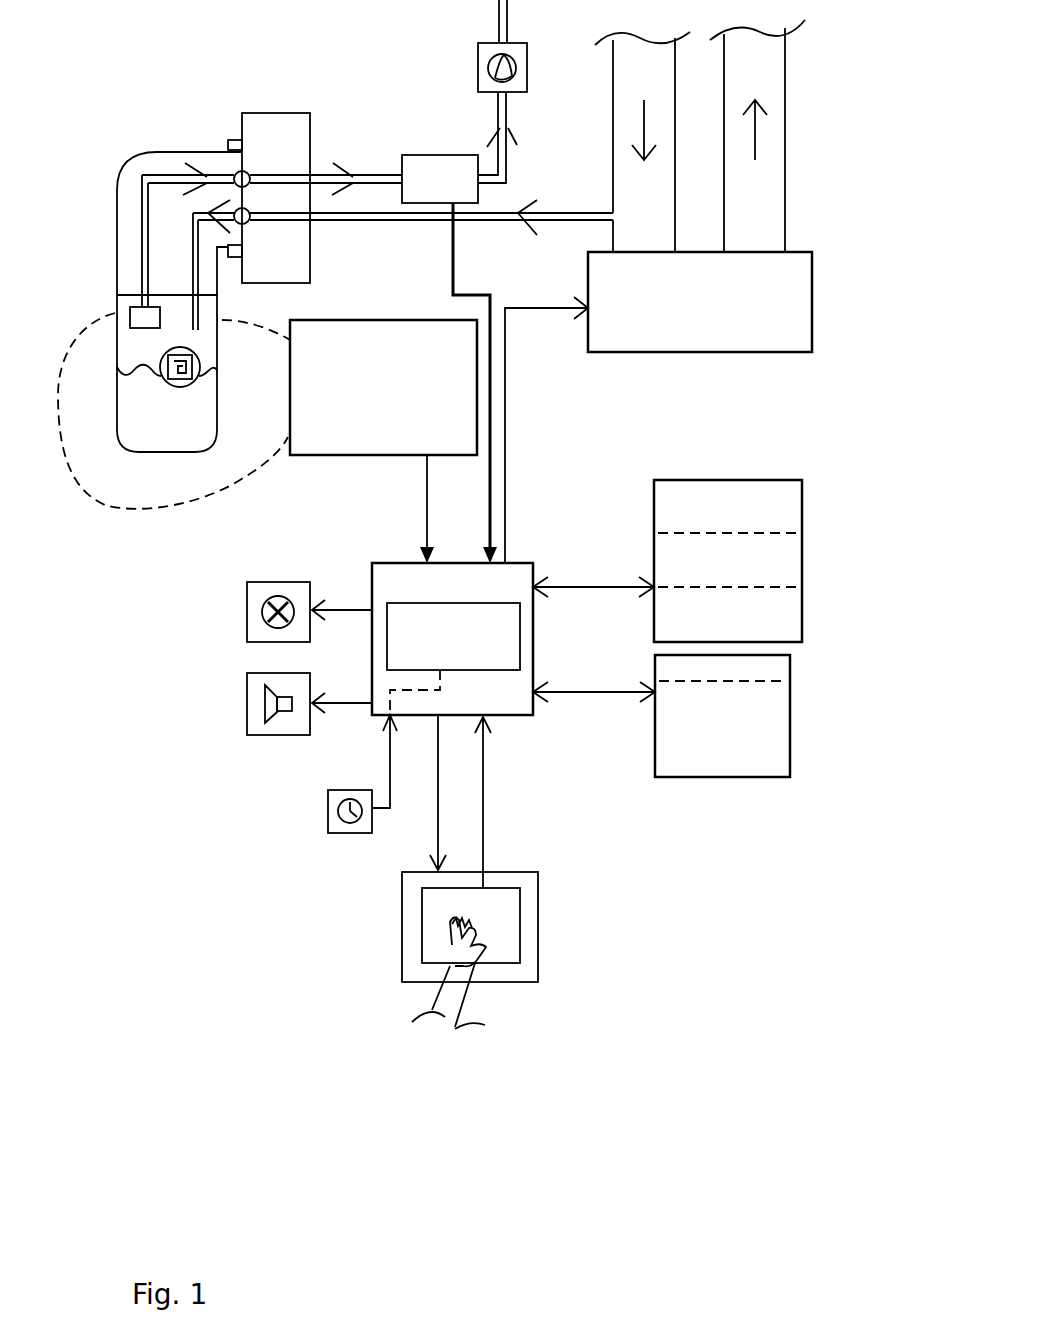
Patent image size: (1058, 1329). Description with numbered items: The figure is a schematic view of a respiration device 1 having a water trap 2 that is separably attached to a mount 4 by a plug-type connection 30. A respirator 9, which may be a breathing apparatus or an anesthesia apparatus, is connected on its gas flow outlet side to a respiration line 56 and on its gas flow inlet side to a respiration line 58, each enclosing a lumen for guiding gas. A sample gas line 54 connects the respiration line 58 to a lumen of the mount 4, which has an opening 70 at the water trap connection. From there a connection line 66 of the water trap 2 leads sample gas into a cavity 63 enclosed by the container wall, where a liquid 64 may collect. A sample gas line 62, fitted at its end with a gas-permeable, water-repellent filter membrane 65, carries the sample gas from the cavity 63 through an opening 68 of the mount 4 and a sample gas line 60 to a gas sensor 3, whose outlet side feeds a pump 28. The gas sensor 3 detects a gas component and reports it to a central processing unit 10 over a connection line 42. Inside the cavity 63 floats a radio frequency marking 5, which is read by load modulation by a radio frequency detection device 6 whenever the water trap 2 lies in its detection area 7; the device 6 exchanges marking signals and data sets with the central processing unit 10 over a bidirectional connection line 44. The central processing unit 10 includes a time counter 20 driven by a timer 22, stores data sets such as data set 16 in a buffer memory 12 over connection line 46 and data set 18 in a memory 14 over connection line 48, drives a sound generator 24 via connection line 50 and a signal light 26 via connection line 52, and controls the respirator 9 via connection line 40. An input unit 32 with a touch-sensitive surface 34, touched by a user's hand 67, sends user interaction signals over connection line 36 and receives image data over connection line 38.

The respiration device 1 is at (686, 856).
The water trap 2 is at (157, 152).
The gas sensor 3 is at (433, 155).
The mount 4 is at (293, 113).
The radio frequency marking 5 is at (197, 397).
The radio frequency detection device 6 is at (357, 456).
The detection area 7 is at (130, 513).
The respirator 9 is at (812, 295).
The central processing unit 10 is at (533, 716).
The memory 12 is at (790, 710).
The memory 14 is at (802, 575).
The data set 16 is at (790, 681).
The data set 18 is at (760, 533).
The time counter 20 is at (520, 627).
The timer 22 is at (340, 833).
The sound generator 24 is at (277, 735).
The signal light 26 is at (245, 608).
The pump 28 is at (478, 45).
The plug-type connection 30 is at (228, 142).
The input unit 32 is at (400, 945).
The touch-sensitive surface 34 is at (513, 915).
The connection line 36 is at (483, 792).
The connection line 38 is at (433, 840).
The connection line 40 is at (505, 455).
The connection line 42 is at (455, 252).
The connection line 44 is at (408, 509).
The connection line 46 is at (600, 693).
The connection line 48 is at (605, 585).
The connection line 50 is at (347, 703).
The connection line 52 is at (348, 607).
The sample gas line 54 is at (567, 213).
The respiration line 56 is at (775, 135).
The respiration line 58 is at (630, 73).
The sample gas line 60 is at (373, 175).
The sample gas line 62 is at (117, 236).
The cavity 63 is at (207, 312).
The liquid 64 is at (183, 428).
The filter membrane 65 is at (110, 345).
The connection line 66 is at (117, 188).
The user's hand 67 is at (443, 1012).
The opening 68 is at (242, 171).
The opening 70 is at (242, 224).